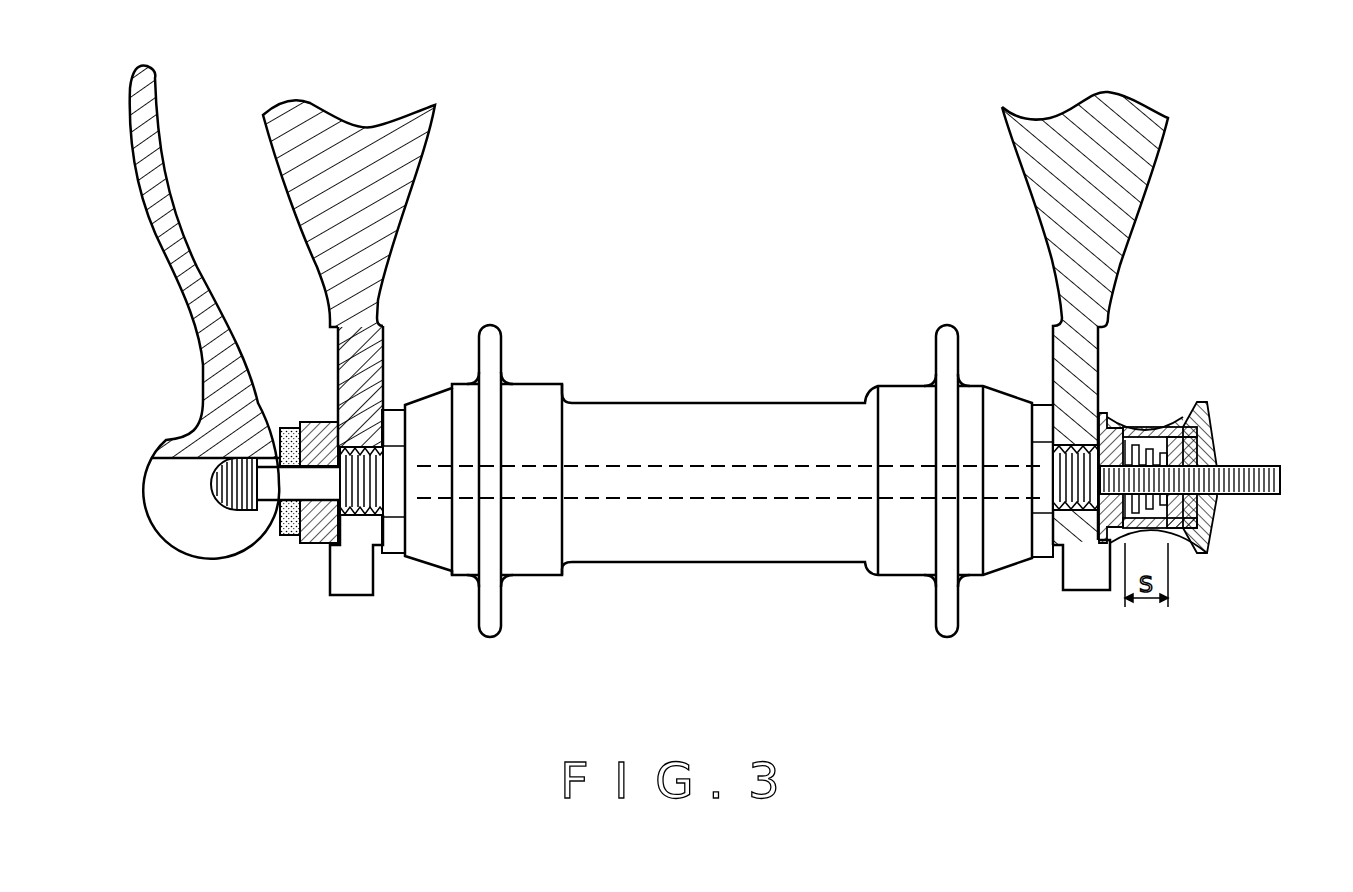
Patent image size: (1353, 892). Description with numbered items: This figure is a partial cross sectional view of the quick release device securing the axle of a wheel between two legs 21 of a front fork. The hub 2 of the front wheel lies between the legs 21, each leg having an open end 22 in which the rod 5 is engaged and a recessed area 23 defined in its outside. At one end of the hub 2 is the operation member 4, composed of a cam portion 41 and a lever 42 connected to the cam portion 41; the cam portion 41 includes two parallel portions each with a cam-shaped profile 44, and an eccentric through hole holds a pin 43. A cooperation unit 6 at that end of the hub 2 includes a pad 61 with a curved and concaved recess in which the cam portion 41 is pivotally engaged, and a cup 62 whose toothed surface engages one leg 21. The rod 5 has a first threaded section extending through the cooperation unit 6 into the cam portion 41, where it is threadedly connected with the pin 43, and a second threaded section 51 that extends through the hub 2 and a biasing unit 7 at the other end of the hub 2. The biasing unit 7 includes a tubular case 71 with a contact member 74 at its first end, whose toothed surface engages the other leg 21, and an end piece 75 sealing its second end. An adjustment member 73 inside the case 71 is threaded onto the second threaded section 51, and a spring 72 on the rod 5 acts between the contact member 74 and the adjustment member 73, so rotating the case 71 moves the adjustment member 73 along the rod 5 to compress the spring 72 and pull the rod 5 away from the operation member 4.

The hub 2 is at (738, 418).
The operation member 4 is at (194, 349).
The rod 5 is at (828, 462).
The cooperation unit 6 is at (298, 482).
The biasing unit 7 is at (1212, 414).
The leg 21 is at (408, 170).
The open end 22 is at (358, 588).
The recessed area 23 is at (336, 339).
The cam portion 41 is at (175, 489).
The lever 42 is at (218, 373).
The pin 43 is at (243, 512).
The cam-shaped profile 44 is at (160, 541).
The second threaded section 51 is at (1282, 478).
The pad 61 is at (290, 428).
The cup 62 is at (318, 422).
The tubular case 71 is at (1231, 432).
The spring 72 is at (1143, 428).
The adjustment member 73 is at (1174, 422).
The contact member 74 is at (1110, 413).
The end piece 75 is at (1218, 448).